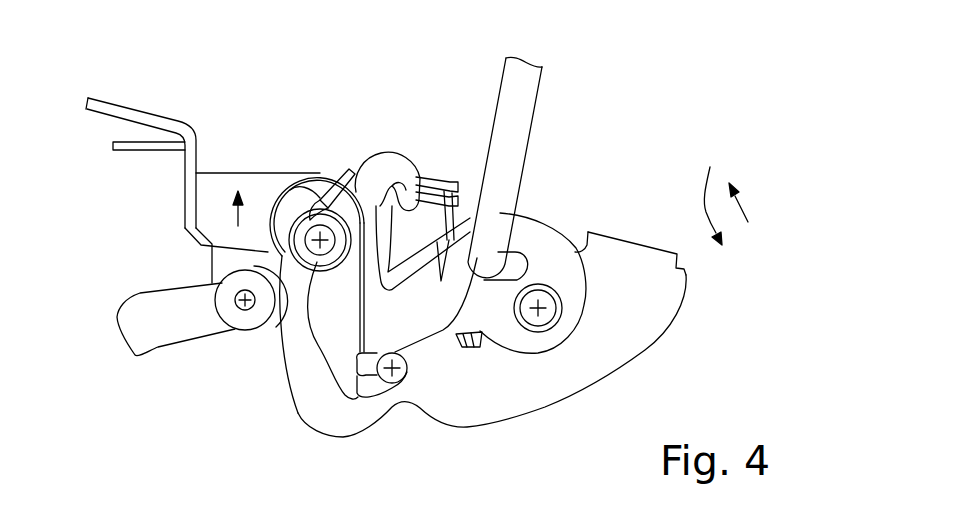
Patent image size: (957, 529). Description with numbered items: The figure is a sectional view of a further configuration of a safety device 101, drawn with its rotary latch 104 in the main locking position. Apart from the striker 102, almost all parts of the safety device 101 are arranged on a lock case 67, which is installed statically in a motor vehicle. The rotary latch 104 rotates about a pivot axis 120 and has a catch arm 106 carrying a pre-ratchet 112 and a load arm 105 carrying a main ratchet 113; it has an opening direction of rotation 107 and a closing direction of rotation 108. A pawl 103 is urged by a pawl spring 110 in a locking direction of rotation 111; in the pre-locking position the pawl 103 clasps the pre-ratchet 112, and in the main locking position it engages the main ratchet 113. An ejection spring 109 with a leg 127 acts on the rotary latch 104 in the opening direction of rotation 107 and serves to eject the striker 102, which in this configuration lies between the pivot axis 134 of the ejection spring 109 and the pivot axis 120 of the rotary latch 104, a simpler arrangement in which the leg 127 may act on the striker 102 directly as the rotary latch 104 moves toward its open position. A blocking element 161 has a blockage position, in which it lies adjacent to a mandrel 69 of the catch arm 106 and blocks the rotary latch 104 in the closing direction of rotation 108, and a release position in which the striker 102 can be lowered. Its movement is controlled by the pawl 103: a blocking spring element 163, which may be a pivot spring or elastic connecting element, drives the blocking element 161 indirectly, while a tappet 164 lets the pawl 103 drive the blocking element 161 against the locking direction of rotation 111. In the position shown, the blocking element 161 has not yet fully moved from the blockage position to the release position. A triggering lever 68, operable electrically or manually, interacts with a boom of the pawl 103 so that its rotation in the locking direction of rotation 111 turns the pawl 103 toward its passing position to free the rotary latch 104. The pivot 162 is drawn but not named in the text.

The safety device 101 is at (168, 81).
The lock case 67 is at (207, 205).
The locking direction of rotation 111 is at (208, 226).
The triggering lever 68 is at (155, 328).
The pivot 162 is at (281, 251).
The blocking spring element 163 is at (283, 364).
The pawl spring 110 is at (303, 193).
The ejection spring 109 is at (316, 215).
The pivot axis of the ejection spring 134 is at (313, 213).
The tappet 164 is at (340, 187).
The pawl 103 is at (383, 157).
The main ratchet 113 is at (413, 166).
The leg 127 is at (447, 186).
The striker 102 is at (518, 94).
The load arm 105 is at (542, 232).
The rotary latch 104 is at (572, 313).
The pivot axis of the rotary latch 120 is at (545, 315).
The catch arm 106 is at (433, 340).
The mandrel 69 is at (398, 383).
The blocking element 161 is at (318, 403).
The pre-ratchet 112 is at (360, 376).
The opening direction of rotation 107 is at (705, 189).
The closing direction of rotation 108 is at (750, 214).